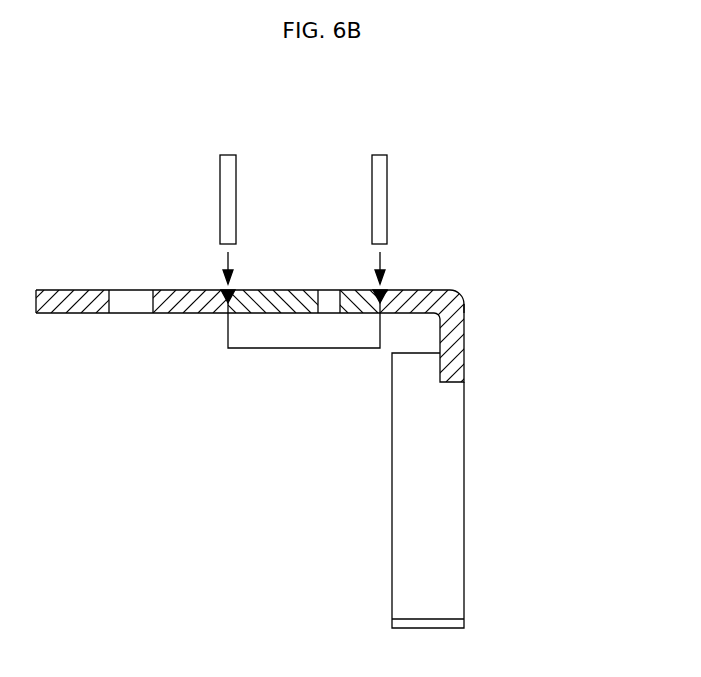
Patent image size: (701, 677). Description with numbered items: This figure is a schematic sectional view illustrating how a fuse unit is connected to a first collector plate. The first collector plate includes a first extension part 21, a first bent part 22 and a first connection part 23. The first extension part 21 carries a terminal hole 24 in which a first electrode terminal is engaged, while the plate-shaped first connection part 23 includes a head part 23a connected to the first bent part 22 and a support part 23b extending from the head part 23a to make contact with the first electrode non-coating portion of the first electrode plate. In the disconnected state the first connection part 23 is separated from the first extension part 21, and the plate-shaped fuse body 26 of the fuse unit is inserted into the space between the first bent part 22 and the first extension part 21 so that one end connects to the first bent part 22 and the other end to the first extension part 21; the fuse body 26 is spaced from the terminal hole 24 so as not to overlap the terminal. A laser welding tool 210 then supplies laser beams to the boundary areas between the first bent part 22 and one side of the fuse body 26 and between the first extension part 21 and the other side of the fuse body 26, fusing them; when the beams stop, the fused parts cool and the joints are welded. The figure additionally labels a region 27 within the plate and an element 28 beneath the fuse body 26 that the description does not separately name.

The first extension part 21 is at (73, 290).
The first bent part 22 is at (456, 288).
The first connection part 23 is at (497, 466).
The head part 23a is at (461, 334).
The support part 23b is at (469, 490).
The terminal hole 24 is at (130, 298).
The fuse body 26 is at (272, 288).
The gap 27 is at (330, 290).
The lower member 28 is at (232, 333).
The laser welding tool 210 is at (228, 157).